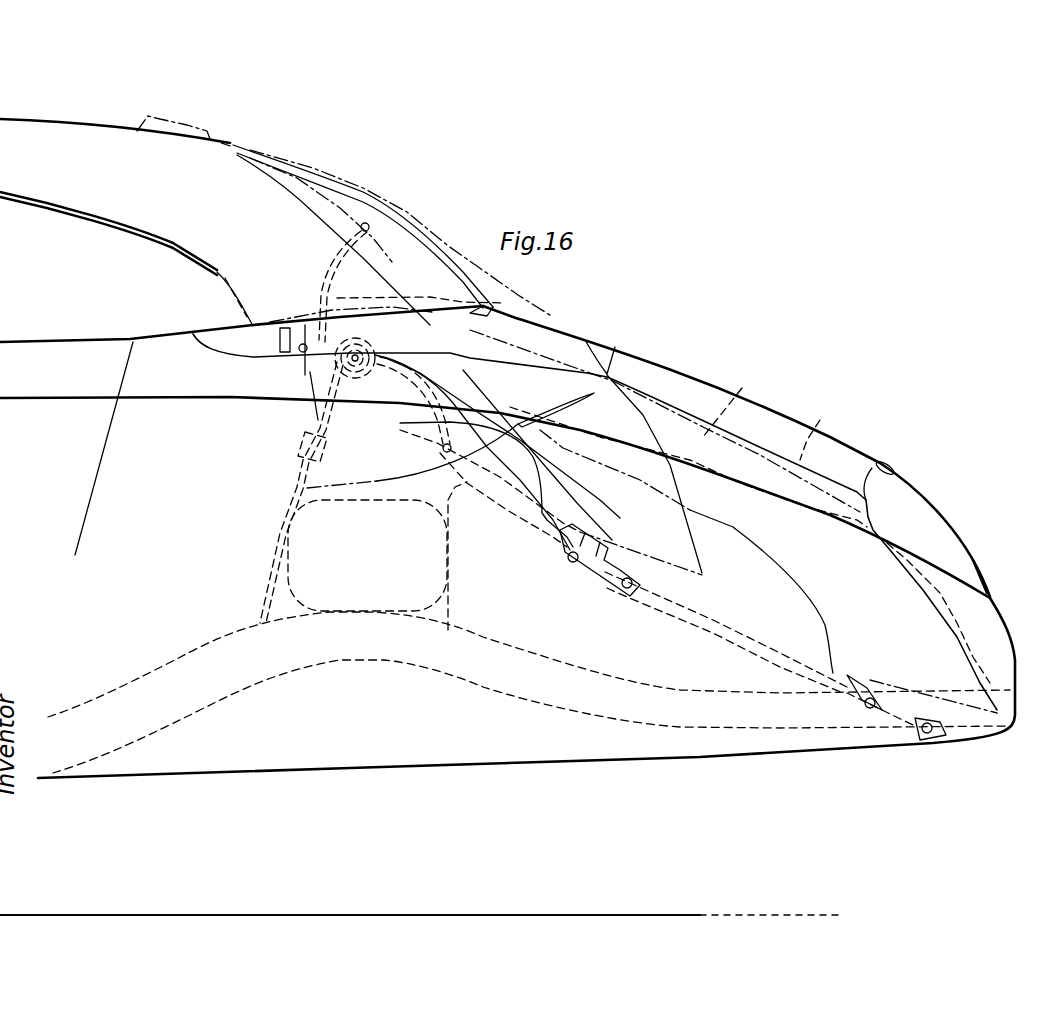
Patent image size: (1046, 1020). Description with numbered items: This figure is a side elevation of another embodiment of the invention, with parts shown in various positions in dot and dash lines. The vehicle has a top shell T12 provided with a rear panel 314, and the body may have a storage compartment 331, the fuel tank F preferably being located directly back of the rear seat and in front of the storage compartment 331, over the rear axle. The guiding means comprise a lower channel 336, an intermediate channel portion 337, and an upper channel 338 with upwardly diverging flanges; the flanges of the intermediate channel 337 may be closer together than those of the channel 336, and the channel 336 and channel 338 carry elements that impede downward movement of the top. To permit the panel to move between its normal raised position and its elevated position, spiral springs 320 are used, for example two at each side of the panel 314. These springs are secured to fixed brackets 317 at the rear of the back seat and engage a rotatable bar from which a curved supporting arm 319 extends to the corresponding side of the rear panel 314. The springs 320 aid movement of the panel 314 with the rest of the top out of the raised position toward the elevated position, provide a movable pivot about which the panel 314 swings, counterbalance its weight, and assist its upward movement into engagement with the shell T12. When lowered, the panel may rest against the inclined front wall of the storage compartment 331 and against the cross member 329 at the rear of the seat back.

The rear panel 314 is at (395, 215).
The fixed brackets 317 is at (322, 424).
The curved supporting arm 319 is at (322, 278).
The spiral springs 320 is at (378, 352).
The cross member 329 is at (300, 442).
The storage compartment 331 is at (739, 399).
The lower channel 336 is at (717, 620).
The intermediate channel portion 337 is at (598, 572).
The upper channel 338 is at (505, 508).
The fuel tank F is at (367, 555).
The top shell T12 is at (503, 275).